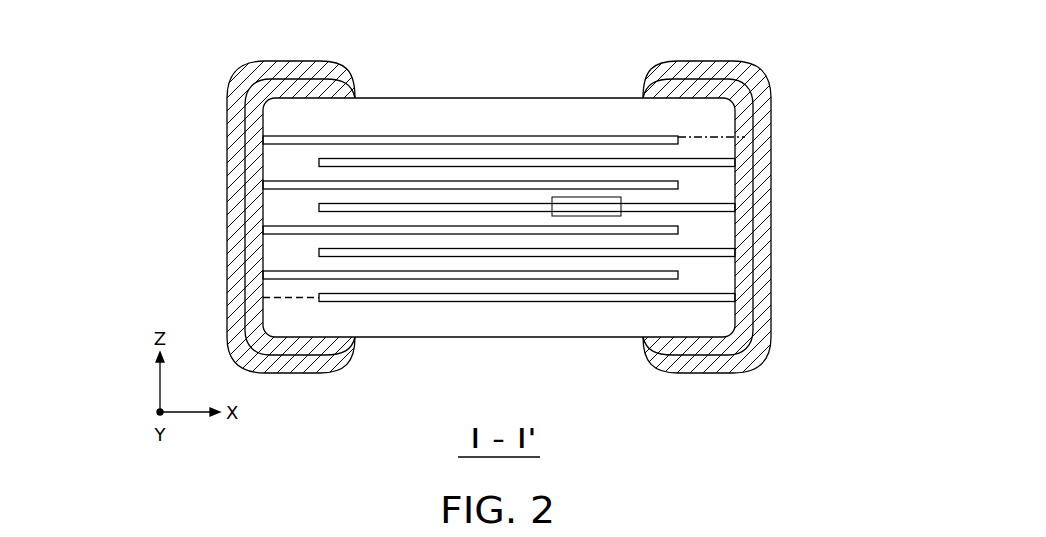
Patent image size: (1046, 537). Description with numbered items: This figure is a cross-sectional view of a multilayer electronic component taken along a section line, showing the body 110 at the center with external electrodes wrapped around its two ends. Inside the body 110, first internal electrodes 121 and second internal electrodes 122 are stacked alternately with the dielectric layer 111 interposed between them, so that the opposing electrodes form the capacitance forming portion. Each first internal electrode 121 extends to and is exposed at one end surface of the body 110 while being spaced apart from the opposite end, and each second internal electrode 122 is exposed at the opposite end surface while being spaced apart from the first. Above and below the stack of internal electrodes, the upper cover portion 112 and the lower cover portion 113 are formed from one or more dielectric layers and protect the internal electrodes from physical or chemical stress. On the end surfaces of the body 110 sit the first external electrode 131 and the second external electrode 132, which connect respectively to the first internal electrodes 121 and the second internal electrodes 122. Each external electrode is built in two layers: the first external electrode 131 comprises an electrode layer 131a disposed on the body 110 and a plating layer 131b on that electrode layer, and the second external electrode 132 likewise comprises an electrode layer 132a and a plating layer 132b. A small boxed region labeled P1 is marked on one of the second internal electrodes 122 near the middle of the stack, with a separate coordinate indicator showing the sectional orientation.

The body 110 is at (433, 98).
The dielectric layer 111 is at (384, 176).
The upper cover portion 112 is at (504, 106).
The lower cover portion 113 is at (498, 326).
The first internal electrode 121 is at (570, 139).
The second internal electrode 122 is at (627, 160).
The first external electrode 131 is at (218, 217).
The electrode layer 131a is at (238, 146).
The plating layer 131b is at (260, 172).
The second external electrode 132 is at (780, 217).
The electrode layer 132a is at (745, 121).
The plating layer 132b is at (762, 151).
The first region P1 is at (591, 217).